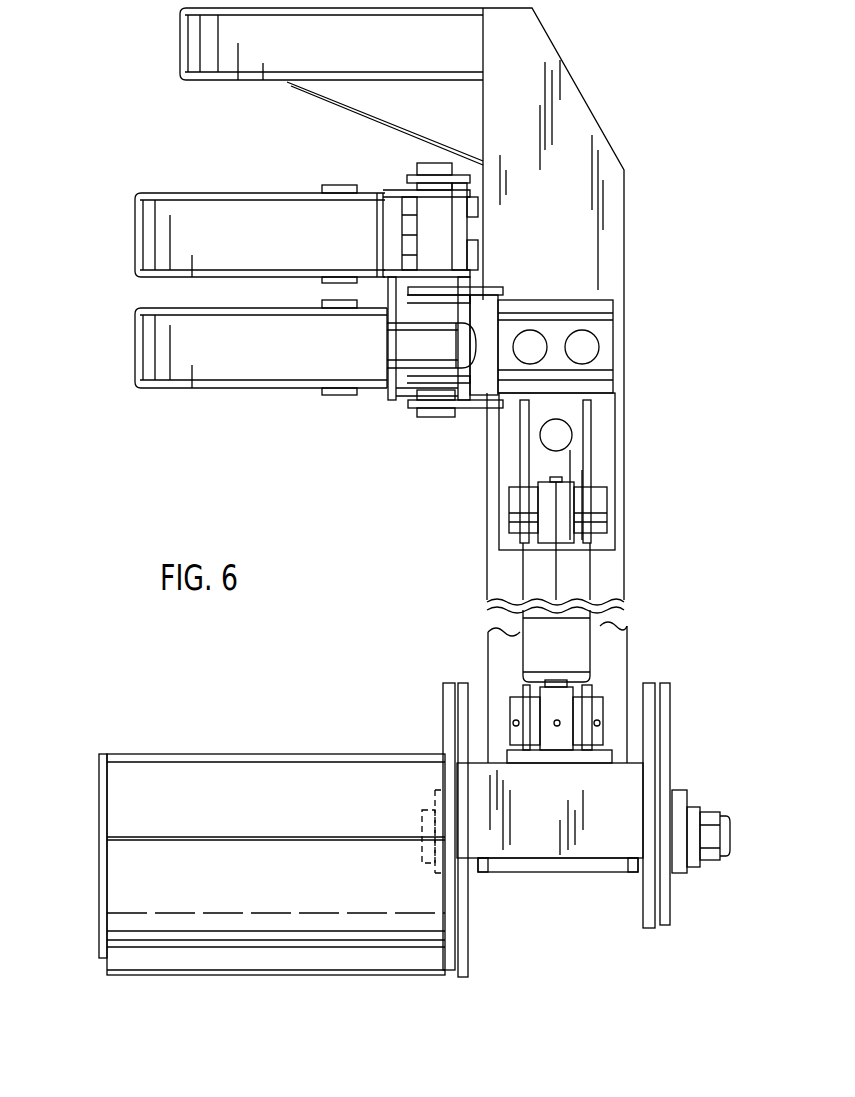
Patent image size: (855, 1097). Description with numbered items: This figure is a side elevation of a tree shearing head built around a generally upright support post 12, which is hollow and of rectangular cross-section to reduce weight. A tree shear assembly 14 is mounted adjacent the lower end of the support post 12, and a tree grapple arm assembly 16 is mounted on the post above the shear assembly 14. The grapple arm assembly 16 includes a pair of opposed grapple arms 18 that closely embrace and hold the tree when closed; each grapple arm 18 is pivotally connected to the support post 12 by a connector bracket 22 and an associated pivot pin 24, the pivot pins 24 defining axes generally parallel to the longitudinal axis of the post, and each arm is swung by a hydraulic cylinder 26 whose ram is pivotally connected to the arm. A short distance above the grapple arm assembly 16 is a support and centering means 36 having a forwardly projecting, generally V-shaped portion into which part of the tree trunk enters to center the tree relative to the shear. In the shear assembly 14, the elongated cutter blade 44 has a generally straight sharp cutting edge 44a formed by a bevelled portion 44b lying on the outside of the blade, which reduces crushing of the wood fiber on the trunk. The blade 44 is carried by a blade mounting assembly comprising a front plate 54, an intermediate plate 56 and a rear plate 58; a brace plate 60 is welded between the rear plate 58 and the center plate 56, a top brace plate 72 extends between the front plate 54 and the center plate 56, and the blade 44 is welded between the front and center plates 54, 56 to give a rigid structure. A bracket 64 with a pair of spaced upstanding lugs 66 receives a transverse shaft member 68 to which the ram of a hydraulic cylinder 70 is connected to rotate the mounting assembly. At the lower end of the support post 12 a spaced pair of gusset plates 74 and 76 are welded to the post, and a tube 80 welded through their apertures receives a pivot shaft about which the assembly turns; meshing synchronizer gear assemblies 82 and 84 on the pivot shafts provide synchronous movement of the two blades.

The support post 12 is at (620, 272).
The tree shear assembly 14 is at (392, 808).
The tree grapple arm assembly 16 is at (270, 286).
The grapple arm 18 is at (233, 208).
The connector bracket 22 is at (412, 180).
The pivot pin 24 is at (428, 165).
The hydraulic cylinder 26 is at (397, 350).
The support and centering means 36 is at (157, 48).
The cutter blade 44 is at (268, 850).
The cutting edge 44a is at (148, 970).
The bevelled portion 44b is at (332, 968).
The front plate 54 is at (102, 818).
The intermediate plate 56 is at (462, 977).
The rear plate 58 is at (650, 920).
The brace plate 60 is at (540, 845).
The bracket 64 is at (605, 702).
The upstanding lug 66 is at (585, 756).
The transverse shaft member 68 is at (600, 708).
The hydraulic cylinder 70 is at (582, 576).
The top brace plate 72 is at (244, 757).
The gusset plate 74 is at (482, 693).
The gusset plate 76 is at (630, 693).
The tube 80 is at (508, 860).
The synchronizer gear assembly 82 is at (432, 793).
The synchronizer gear assembly 84 is at (685, 795).